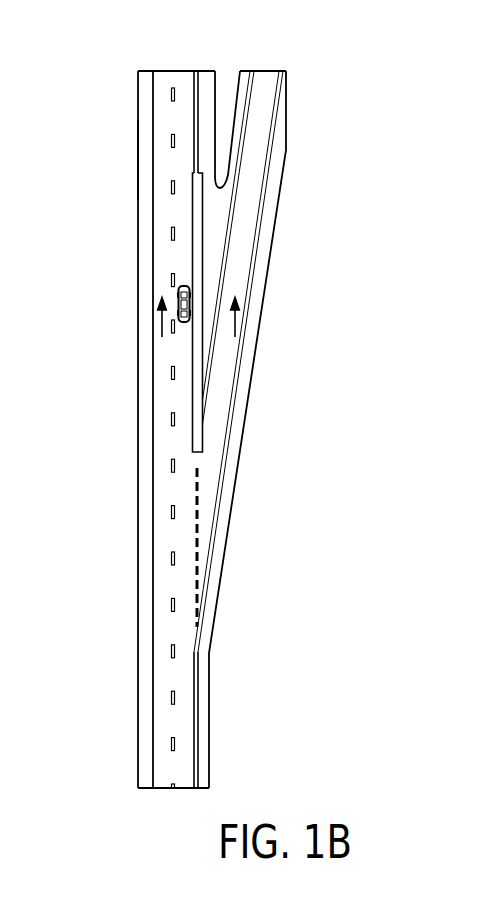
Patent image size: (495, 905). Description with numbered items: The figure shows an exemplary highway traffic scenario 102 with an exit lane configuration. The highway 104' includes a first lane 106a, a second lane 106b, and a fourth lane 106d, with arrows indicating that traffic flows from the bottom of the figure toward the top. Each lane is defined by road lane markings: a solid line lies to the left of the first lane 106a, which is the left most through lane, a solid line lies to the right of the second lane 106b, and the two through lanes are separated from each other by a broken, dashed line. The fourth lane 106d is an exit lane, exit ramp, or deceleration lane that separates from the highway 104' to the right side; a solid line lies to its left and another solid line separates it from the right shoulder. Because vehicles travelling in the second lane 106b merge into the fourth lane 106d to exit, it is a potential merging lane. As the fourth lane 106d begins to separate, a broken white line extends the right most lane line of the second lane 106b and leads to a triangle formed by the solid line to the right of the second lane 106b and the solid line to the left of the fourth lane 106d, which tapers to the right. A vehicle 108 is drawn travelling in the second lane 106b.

The highway traffic scenario 102 is at (329, 87).
The highway 104' is at (95, 429).
The first lane 106a is at (162, 78).
The second lane 106b is at (189, 78).
The fourth lane 106d is at (229, 348).
The vehicle 108 is at (177, 294).